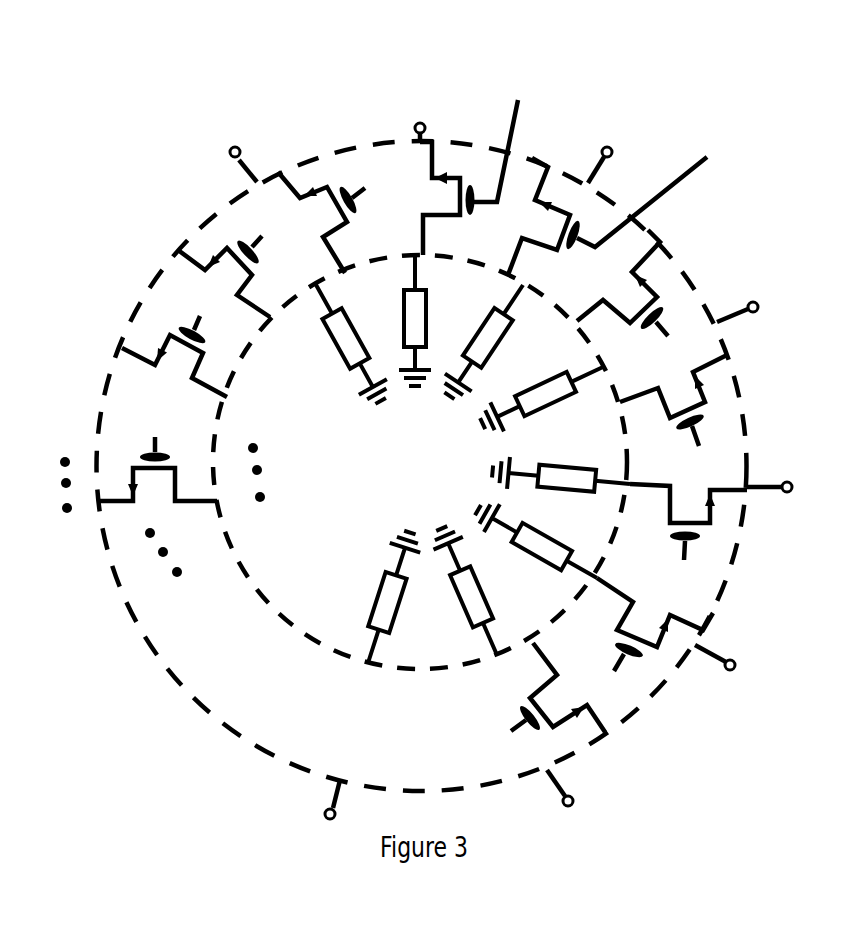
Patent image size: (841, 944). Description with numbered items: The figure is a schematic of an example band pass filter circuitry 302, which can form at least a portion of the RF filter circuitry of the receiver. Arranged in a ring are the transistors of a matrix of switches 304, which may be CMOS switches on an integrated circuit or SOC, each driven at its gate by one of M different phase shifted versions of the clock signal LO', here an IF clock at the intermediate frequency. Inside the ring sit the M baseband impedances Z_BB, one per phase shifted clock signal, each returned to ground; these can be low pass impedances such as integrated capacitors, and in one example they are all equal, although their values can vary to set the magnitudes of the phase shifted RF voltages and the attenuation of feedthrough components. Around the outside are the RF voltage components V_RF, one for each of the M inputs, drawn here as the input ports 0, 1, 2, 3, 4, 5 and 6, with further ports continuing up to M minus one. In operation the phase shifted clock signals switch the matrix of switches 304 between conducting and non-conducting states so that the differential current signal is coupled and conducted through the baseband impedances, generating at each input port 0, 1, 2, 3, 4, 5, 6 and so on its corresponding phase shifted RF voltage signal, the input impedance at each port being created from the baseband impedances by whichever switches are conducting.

The band pass filter circuitry 302 is at (708, 104).
The matrix of switches 304 is at (668, 283).
The input port 0 is at (422, 108).
The input port 1 is at (621, 148).
The input port 2 is at (759, 300).
The input port 3 is at (794, 474).
The input port 4 is at (747, 654).
The input port 5 is at (601, 796).
The input port 6 is at (293, 804).